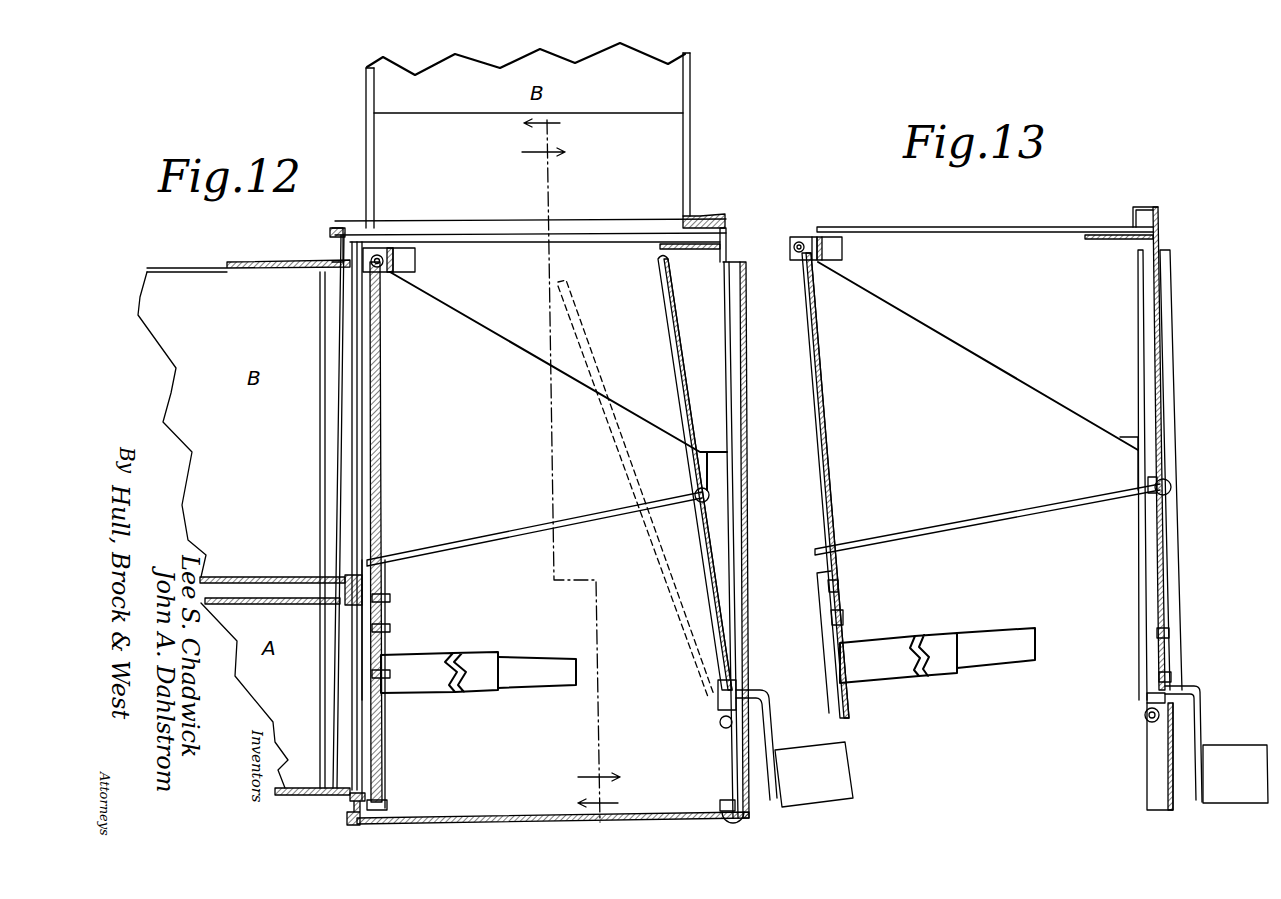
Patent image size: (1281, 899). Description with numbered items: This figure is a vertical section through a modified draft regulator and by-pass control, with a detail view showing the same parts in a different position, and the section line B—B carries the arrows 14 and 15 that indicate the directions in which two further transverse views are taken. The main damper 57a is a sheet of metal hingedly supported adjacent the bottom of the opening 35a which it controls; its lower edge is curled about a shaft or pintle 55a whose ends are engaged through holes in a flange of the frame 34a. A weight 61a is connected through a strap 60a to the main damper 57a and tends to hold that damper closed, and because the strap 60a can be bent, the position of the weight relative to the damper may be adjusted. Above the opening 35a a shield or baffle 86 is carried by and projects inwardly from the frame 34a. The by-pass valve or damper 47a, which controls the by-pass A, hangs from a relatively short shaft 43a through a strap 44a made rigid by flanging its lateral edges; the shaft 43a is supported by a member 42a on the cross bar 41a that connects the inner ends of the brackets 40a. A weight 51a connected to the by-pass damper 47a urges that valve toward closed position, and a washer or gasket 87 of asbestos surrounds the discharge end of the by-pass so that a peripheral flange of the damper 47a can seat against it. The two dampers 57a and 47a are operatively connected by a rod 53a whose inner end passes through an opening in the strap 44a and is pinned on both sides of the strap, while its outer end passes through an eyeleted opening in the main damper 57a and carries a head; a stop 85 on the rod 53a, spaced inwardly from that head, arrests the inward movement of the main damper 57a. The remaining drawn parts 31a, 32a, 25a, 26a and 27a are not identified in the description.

In FIG. 12, the hopper side wall 31a is at (675, 80).
In FIG. 12, the hopper bottom plate 32a is at (670, 157).
In FIG. 12, the section arrows 14 is at (584, 468).
In FIG. 12, the section arrows 15 is at (558, 465).
In FIG. 12, the top wall of compartment 25a is at (198, 292).
In FIG. 12, the shelf partition 26a is at (222, 608).
In FIG. 12, the partition wall 27a is at (400, 478).
In FIG. 12, the washer or gasket 87 is at (365, 655).
In FIG. 12, the strap 44a is at (383, 405).
In FIG. 13, the strap 44a is at (830, 412).
In FIG. 12, the shaft 43a is at (386, 270).
In FIG. 13, the shaft 43a is at (794, 250).
In FIG. 13, the member 42a is at (795, 262).
In FIG. 12, the cross bar 41a is at (416, 262).
In FIG. 13, the cross bar 41a is at (824, 250).
In FIG. 12, the brackets 40a is at (558, 381).
In FIG. 13, the brackets 40a is at (978, 356).
In FIG. 12, the shield or baffle 86 is at (660, 249).
In FIG. 13, the shield or baffle 86 is at (1105, 240).
In FIG. 12, the main damper 57a is at (672, 332).
In FIG. 13, the main damper 57a is at (1157, 330).
In FIG. 12, the rod 53a is at (476, 542).
In FIG. 13, the rod 53a is at (976, 526).
In FIG. 13, the stop 85 is at (1098, 490).
In FIG. 12, the weight 51a is at (524, 665).
In FIG. 13, the weight 51a is at (1010, 638).
In FIG. 12, the by-pass valve or damper 47a is at (386, 718).
In FIG. 13, the by-pass valve or damper 47a is at (845, 630).
In FIG. 12, the strap 60a is at (773, 728).
In FIG. 13, the strap 60a is at (1204, 712).
In FIG. 12, the weight 61a is at (814, 774).
In FIG. 13, the weight 61a is at (1235, 755).
In FIG. 13, the opening 35a is at (1172, 433).
In FIG. 13, the shaft or pintle 55a is at (1145, 716).
In FIG. 13, the frame 34a is at (1165, 768).